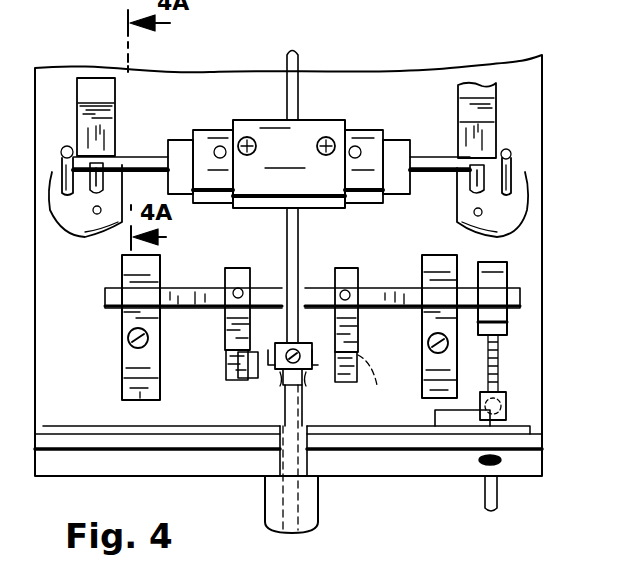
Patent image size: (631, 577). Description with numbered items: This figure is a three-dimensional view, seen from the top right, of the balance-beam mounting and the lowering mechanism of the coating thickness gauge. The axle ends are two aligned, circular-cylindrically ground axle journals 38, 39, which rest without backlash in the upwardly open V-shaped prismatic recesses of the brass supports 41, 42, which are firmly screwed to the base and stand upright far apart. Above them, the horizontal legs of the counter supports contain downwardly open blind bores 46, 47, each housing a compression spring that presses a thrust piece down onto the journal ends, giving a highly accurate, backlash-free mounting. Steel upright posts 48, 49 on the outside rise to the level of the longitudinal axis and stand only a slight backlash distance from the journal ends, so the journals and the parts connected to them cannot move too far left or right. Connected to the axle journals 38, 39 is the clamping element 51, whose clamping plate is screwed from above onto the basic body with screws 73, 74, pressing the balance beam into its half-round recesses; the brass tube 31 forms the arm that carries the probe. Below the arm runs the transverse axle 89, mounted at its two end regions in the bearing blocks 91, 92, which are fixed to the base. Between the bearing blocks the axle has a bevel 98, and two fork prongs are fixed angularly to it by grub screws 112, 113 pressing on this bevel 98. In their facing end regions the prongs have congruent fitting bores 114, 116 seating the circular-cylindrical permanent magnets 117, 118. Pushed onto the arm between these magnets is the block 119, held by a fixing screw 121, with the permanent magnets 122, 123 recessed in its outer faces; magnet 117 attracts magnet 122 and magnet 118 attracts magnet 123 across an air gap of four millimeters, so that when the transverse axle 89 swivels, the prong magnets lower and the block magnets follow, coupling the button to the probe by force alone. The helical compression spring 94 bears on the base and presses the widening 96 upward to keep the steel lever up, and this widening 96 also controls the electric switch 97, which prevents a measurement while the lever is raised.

The brass tube 31 is at (275, 520).
The axle journal 38 is at (430, 157).
The axle journal 39 is at (148, 157).
The support 41 is at (78, 108).
The support 42 is at (488, 96).
The blind bore 46 is at (500, 203).
The blind bore 47 is at (88, 197).
The upright post 48 is at (512, 178).
The upright post 49 is at (62, 155).
The clamping element 51 is at (222, 118).
The screw 73 is at (247, 137).
The screw 74 is at (327, 137).
The transverse axle 89 is at (490, 262).
The bearing block 91 is at (122, 352).
The bearing block 92 is at (425, 262).
The helical compression spring 94 is at (500, 410).
The widening 96 is at (506, 396).
The electric switch 97 is at (445, 416).
The bevel 98 is at (190, 288).
The grub screw 112 is at (236, 288).
The grub screw 113 is at (346, 290).
The fitting bore 114 is at (225, 358).
The fitting bore 116 is at (384, 386).
The permanent magnet 117 is at (257, 357).
The permanent magnet 118 is at (335, 358).
The block 119 is at (283, 374).
The fixing screw 121 is at (305, 372).
The permanent magnet 122 is at (273, 348).
The permanent magnet 123 is at (310, 340).